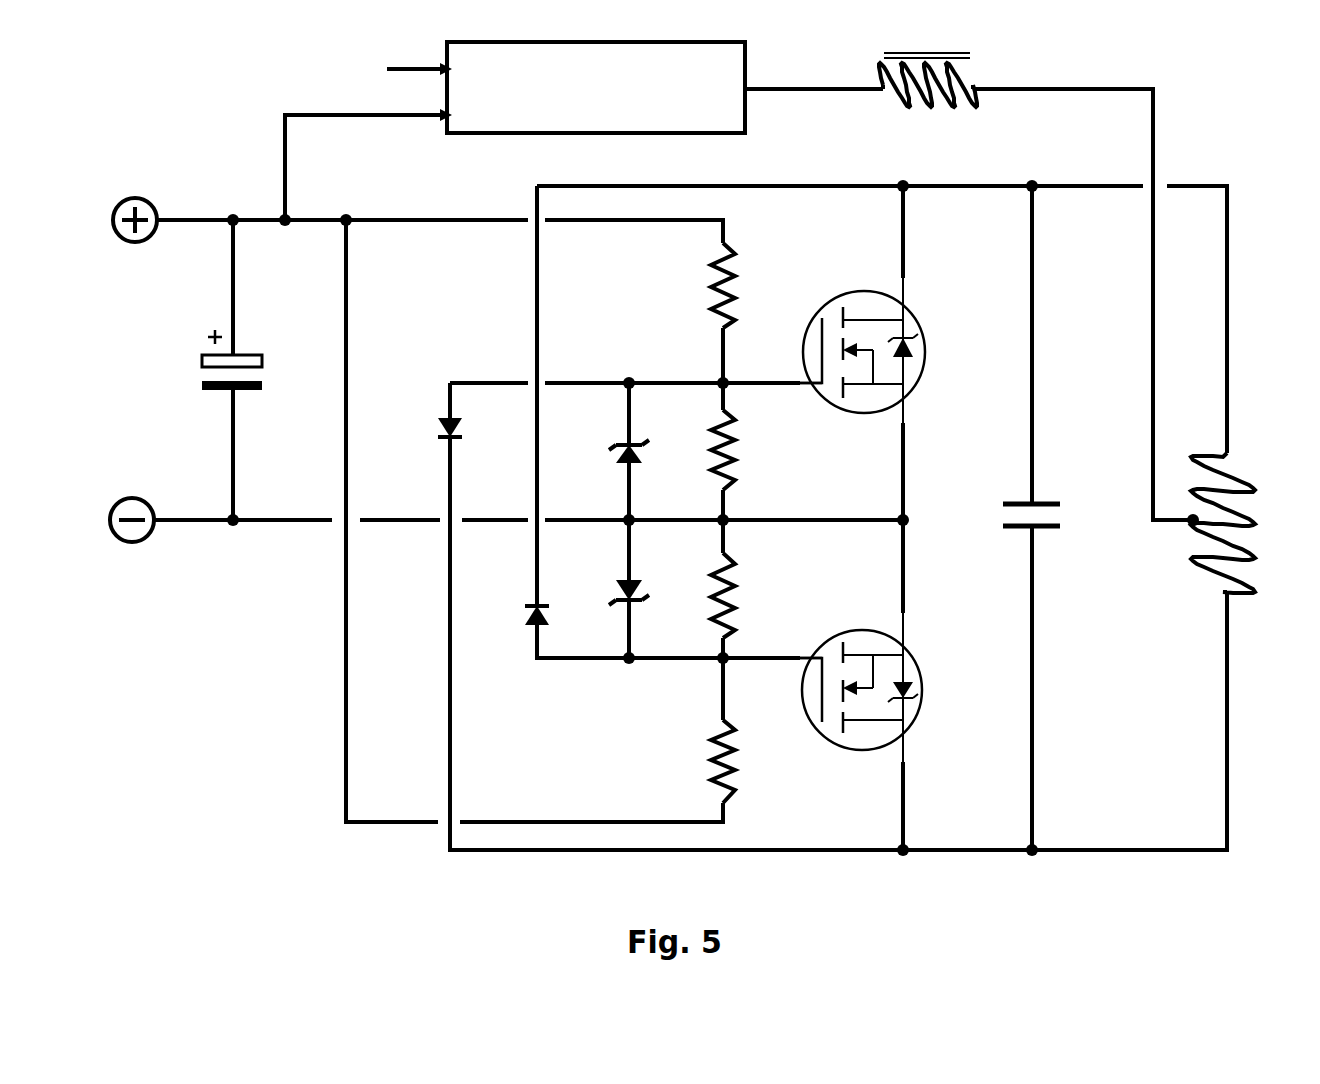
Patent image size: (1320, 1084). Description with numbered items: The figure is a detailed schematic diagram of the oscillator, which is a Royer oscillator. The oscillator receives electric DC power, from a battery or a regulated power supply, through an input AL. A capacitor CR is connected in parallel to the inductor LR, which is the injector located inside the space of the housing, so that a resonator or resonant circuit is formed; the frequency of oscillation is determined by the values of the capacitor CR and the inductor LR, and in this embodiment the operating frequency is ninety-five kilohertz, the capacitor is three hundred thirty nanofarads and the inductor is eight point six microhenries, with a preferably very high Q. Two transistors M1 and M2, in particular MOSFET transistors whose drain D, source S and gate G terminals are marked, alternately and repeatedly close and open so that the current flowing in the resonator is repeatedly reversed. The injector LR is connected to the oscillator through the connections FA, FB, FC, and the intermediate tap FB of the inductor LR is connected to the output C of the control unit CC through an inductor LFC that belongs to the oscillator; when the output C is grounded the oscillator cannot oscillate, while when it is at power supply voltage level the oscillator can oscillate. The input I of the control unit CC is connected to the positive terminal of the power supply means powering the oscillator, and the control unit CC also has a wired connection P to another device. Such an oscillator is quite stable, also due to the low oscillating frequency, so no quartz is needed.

The wired connection P is at (394, 71).
The input of unit CC I is at (362, 142).
The control unit CC is at (596, 87).
The output of unit CC C is at (814, 114).
The inductor LFC is at (928, 106).
The input AL is at (179, 370).
The transistor M1 is at (893, 353).
The transistor M2 is at (893, 685).
The drain terminal D is at (911, 523).
The source terminal S is at (911, 519).
The gate terminal G is at (802, 521).
The capacitor CR is at (1046, 518).
The inductor LR is at (1251, 523).
The connection FA is at (1252, 319).
The intermediate tap FB is at (1162, 545).
The connection FC is at (1253, 721).